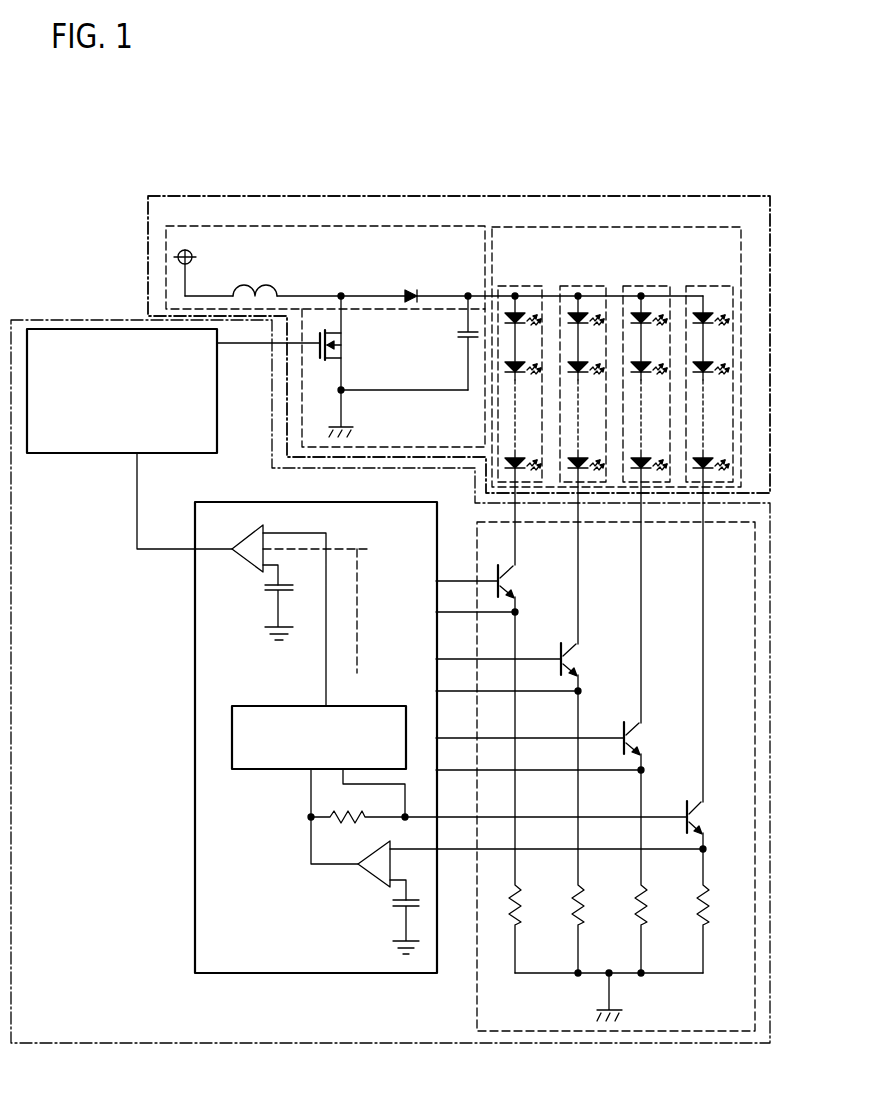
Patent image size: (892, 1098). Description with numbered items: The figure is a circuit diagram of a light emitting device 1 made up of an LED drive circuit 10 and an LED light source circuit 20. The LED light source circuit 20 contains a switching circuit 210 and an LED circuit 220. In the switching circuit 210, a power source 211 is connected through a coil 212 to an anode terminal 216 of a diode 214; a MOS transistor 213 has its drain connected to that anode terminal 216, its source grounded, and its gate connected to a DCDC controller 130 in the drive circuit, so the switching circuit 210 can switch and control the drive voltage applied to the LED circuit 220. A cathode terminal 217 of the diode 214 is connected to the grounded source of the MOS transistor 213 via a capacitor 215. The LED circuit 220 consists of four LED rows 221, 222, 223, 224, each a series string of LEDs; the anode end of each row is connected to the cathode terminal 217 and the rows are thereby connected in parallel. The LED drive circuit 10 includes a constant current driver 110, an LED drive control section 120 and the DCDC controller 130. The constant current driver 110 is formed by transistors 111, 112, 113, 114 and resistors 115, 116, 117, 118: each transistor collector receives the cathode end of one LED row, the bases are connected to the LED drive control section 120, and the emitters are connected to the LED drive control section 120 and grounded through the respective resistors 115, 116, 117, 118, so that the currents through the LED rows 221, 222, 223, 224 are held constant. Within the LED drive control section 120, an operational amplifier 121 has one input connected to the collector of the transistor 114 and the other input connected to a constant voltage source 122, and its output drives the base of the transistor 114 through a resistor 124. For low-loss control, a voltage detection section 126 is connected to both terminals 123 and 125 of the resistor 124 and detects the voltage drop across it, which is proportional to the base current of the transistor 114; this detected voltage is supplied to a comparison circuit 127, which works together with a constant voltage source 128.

The light emitting device 1 is at (704, 154).
The LED drive circuit 10 is at (60, 320).
The LED light source circuit 20 is at (771, 230).
The constant current driver 110 is at (477, 993).
The transistor 111 is at (507, 584).
The transistor 112 is at (572, 662).
The transistor 113 is at (634, 742).
The transistor 114 is at (697, 821).
The resistor 115 is at (520, 907).
The resistor 116 is at (583, 907).
The resistor 117 is at (646, 907).
The resistor 118 is at (708, 907).
The LED drive control section 120 is at (222, 502).
The operational amplifier 121 is at (385, 885).
The constant voltage source 122 is at (396, 908).
The terminal 123 is at (310, 816).
The resistor 124 is at (353, 824).
The terminal 125 is at (405, 816).
The voltage detection section 126 is at (362, 705).
The comparison circuit 127 is at (258, 571).
The constant voltage source 128 is at (270, 593).
The DCDC controller 130 is at (63, 454).
The switching circuit 210 is at (250, 226).
The power source 211 is at (192, 252).
The coil 212 is at (256, 288).
The MOS transistor 213 is at (340, 346).
The diode 214 is at (411, 289).
The capacitor 215 is at (458, 340).
The anode terminal 216 is at (341, 294).
The cathode terminal 217 is at (468, 294).
The LED circuit 220 is at (694, 227).
The LED row 221 is at (521, 286).
The LED row 222 is at (584, 286).
The LED row 223 is at (647, 286).
The LED row 224 is at (710, 286).